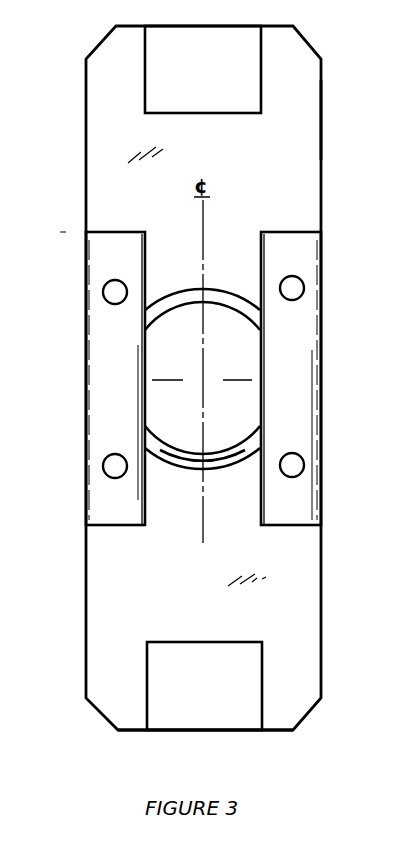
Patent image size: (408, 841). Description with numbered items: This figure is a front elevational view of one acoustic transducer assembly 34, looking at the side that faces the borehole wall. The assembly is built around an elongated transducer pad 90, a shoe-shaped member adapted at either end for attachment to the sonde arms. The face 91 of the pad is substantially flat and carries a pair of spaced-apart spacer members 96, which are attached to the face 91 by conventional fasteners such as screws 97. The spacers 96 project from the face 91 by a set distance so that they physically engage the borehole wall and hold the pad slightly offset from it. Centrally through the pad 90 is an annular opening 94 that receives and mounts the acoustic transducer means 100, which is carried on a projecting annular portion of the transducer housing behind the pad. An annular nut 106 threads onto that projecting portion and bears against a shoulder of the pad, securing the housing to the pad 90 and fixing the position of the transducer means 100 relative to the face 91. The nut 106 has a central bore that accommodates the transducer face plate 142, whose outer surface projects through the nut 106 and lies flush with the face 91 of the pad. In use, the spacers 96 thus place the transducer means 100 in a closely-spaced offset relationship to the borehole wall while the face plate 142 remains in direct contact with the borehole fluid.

The acoustic transducer assembly 34 is at (84, 730).
The transducer pad 90 is at (86, 128).
The face of the transducer pad 91 is at (297, 137).
The annular opening 94 is at (181, 478).
The spacer members 96 is at (102, 350).
The screws 97 is at (292, 287).
The acoustic transducer means 100 is at (227, 320).
The annular nut 106 is at (222, 450).
The transducer face plate 142 is at (175, 318).